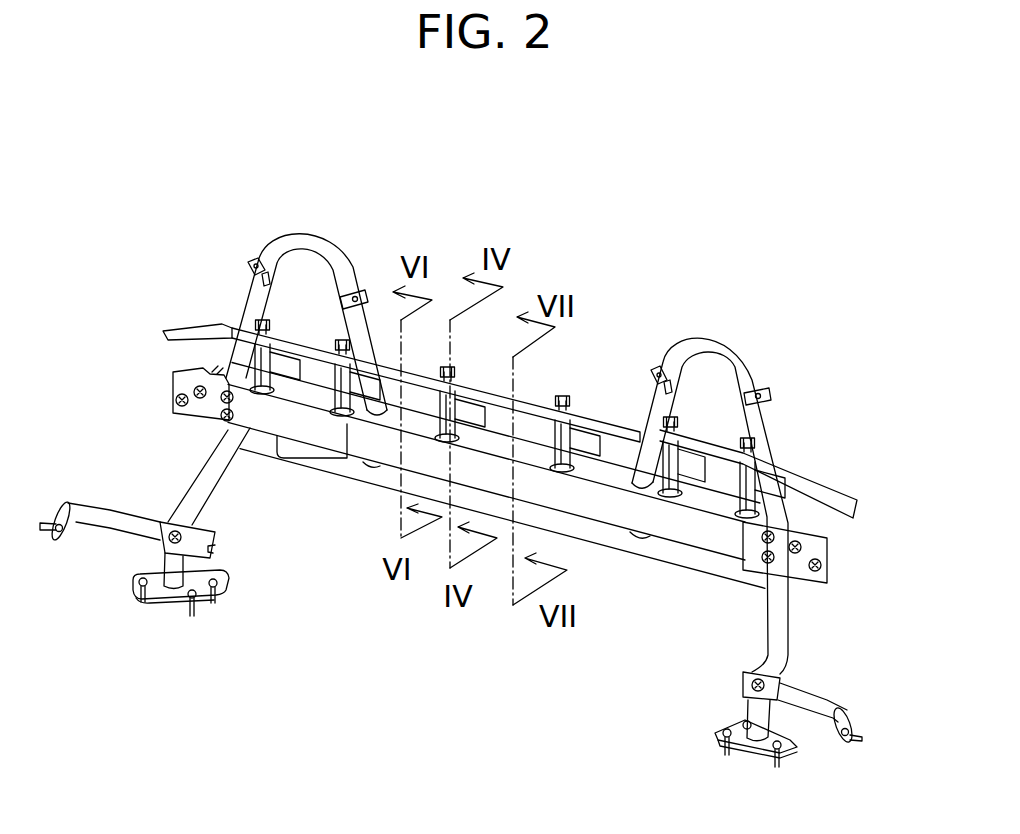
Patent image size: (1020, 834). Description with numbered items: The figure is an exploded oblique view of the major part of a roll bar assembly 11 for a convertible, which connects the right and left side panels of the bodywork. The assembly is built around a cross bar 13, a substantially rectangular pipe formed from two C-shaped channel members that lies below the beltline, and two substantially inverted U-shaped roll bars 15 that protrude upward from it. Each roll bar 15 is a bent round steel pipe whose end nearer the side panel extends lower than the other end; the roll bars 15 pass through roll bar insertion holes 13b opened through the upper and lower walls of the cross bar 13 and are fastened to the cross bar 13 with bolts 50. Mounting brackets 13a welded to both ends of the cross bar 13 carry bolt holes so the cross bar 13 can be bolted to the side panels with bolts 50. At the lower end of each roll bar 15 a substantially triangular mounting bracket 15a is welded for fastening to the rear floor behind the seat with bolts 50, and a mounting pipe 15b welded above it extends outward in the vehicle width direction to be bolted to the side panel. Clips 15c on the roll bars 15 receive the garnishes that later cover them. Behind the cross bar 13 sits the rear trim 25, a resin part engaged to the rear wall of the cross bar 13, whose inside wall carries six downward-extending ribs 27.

The roll bar assembly 11 is at (612, 210).
The cross bar 13 is at (597, 468).
The mounting bracket 13a is at (178, 383).
The roll bar insertion hole 13b is at (226, 418).
The roll bar 15 is at (311, 243).
The mounting bracket 15a is at (167, 598).
The mounting pipe 15b is at (98, 520).
The clip 15c is at (250, 264).
The rear trim 25 is at (608, 418).
The rib 27 is at (289, 362).
The bolt 50 is at (172, 404).